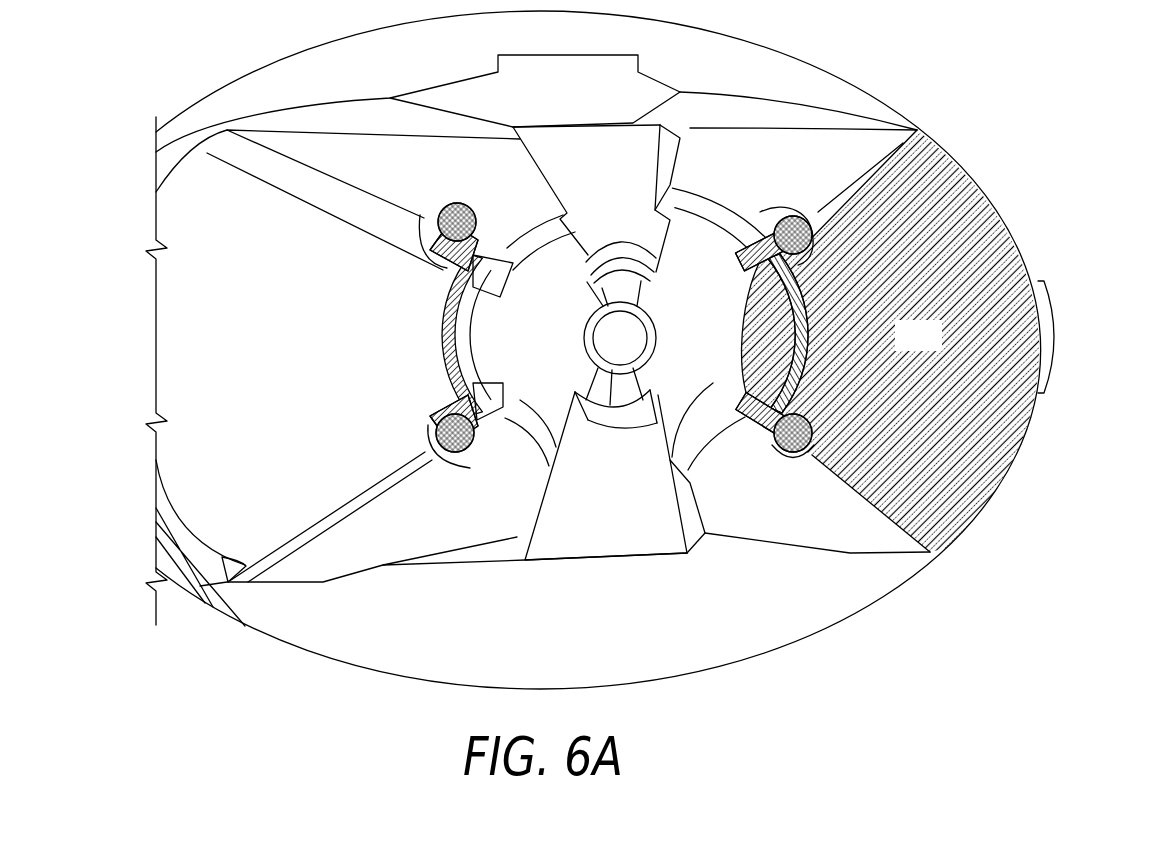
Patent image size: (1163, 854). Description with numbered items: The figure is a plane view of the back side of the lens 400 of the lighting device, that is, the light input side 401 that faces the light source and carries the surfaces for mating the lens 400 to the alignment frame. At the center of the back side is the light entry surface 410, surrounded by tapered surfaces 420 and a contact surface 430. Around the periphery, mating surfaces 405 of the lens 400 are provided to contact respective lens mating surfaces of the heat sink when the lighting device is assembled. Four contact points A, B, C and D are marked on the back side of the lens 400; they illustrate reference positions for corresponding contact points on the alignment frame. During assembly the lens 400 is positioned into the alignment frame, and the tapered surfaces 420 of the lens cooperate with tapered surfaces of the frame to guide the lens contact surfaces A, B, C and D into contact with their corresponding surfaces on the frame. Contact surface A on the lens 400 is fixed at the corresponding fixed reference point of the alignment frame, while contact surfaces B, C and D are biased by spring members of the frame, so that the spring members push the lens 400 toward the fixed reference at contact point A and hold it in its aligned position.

The lens 400 is at (918, 583).
The light input side 401 is at (647, 344).
The mating surfaces 405 is at (1060, 340).
The light entry surface 410 is at (600, 338).
The tapered surfaces 420 is at (762, 337).
The contact surface 430 is at (447, 325).
The contact point A is at (776, 452).
The contact point B is at (784, 222).
The contact point C is at (447, 212).
The contact point D is at (432, 432).